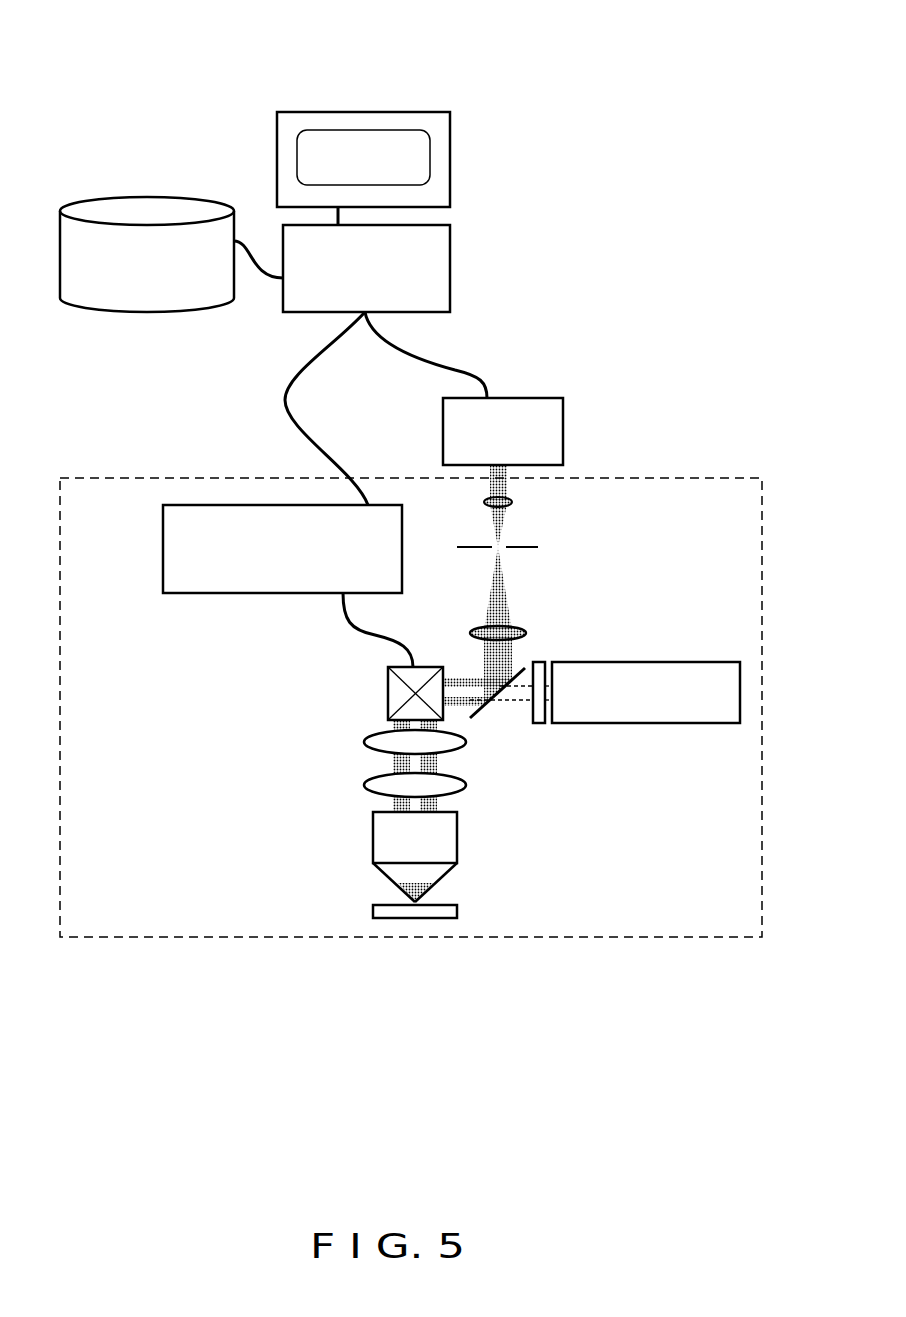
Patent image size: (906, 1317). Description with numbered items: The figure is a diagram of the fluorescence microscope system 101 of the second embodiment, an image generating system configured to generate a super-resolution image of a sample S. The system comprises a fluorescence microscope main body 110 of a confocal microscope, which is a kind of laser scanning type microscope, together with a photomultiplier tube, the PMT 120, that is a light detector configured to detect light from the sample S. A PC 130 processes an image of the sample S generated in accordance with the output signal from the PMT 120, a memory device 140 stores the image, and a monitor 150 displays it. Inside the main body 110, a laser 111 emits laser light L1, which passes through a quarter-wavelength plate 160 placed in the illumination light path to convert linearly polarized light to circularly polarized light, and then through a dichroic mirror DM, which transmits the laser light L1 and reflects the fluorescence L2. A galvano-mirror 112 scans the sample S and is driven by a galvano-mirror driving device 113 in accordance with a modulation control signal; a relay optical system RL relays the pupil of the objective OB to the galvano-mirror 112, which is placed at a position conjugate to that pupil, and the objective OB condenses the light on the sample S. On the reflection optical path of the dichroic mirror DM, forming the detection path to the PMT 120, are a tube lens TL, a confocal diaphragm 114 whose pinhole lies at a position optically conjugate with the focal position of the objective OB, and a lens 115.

The fluorescence microscope system 101 is at (678, 47).
The fluorescence microscope main body 110 is at (663, 478).
The laser 111 is at (665, 661).
The galvano-mirror 112 is at (388, 690).
The galvano-mirror driving device 113 is at (163, 548).
The confocal diaphragm 114 is at (538, 546).
The lens 115 is at (512, 498).
The photomultiplier tube (PMT) 120 is at (563, 428).
The PC 130 is at (450, 268).
The memory device 140 is at (143, 312).
The monitor 150 is at (450, 158).
The ¼-wavelength plate 160 is at (538, 723).
The laser light L1 is at (503, 702).
The fluorescence L2 is at (498, 597).
The tube lens TL is at (527, 628).
The relay optical system RL is at (345, 725).
The objective OB is at (373, 838).
The dichroic mirror DM is at (478, 720).
The sample S is at (457, 910).